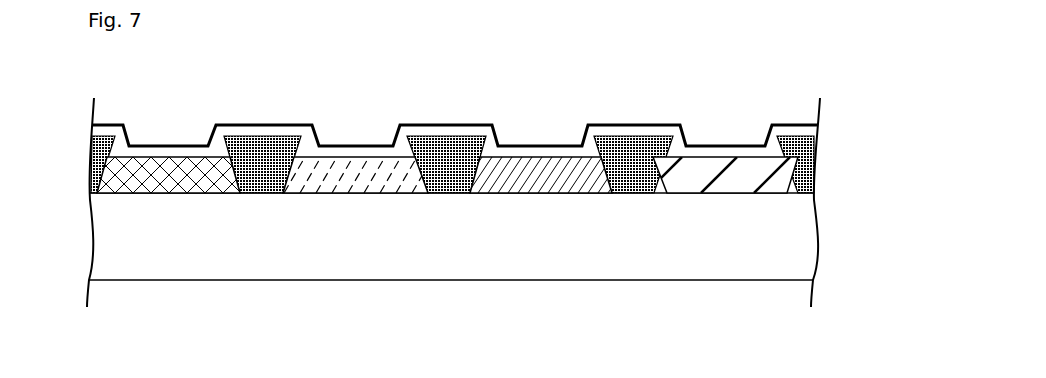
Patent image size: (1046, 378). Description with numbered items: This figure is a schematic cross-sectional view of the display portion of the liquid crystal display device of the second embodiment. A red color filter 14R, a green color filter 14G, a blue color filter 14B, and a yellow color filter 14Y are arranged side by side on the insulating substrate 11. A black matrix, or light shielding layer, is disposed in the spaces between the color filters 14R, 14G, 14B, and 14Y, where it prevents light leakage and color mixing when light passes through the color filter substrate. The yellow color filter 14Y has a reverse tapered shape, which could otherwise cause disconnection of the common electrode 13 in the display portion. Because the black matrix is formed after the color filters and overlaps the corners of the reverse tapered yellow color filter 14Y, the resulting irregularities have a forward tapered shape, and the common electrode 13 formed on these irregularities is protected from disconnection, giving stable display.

The insulating substrate 11 is at (663, 269).
The common electrode 13 is at (632, 132).
The red color filter 14R is at (169, 172).
The green color filter 14G is at (355, 172).
The blue color filter 14B is at (542, 172).
The yellow color filter 14Y is at (728, 172).